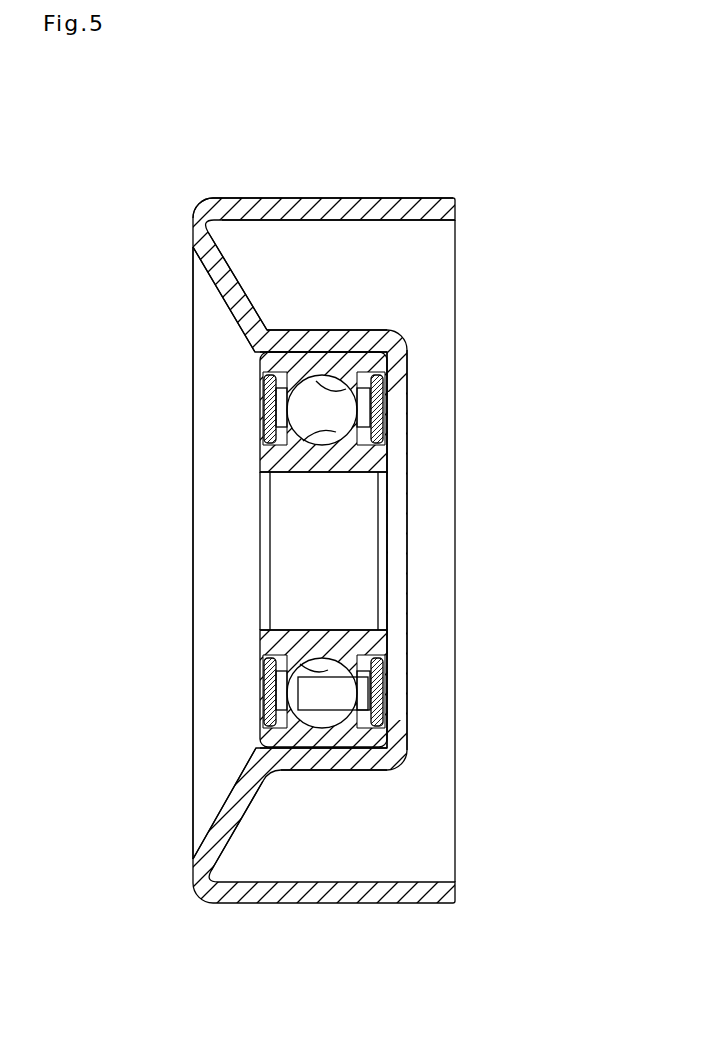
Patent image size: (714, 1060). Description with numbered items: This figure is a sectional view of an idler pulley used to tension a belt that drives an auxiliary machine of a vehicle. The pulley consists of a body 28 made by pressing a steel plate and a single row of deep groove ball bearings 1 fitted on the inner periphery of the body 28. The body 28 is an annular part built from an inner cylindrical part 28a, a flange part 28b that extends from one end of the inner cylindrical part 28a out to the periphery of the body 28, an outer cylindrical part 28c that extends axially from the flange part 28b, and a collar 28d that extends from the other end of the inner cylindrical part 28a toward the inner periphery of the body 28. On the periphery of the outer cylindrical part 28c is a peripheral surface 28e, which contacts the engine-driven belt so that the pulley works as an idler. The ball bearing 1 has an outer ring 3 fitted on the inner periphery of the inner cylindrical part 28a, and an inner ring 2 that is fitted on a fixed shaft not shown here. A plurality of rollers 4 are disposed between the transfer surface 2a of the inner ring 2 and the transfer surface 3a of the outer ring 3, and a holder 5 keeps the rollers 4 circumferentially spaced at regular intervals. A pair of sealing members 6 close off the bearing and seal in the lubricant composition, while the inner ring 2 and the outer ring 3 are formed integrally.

The deep groove ball bearing 1 is at (335, 504).
The inner ring 2 is at (259, 458).
The transfer surface of the inner ring 2a is at (300, 474).
The outer ring 3 is at (395, 360).
The transfer surface of the outer ring 3a is at (347, 388).
The roller 4 is at (310, 411).
The holder 5 is at (372, 407).
The sealing member 6 is at (378, 440).
The body 28 is at (466, 207).
The inner cylindrical part 28a is at (353, 332).
The flange part 28b is at (218, 296).
The outer cylindrical part 28c is at (243, 198).
The collar 28d is at (410, 357).
The peripheral surface 28e is at (397, 198).